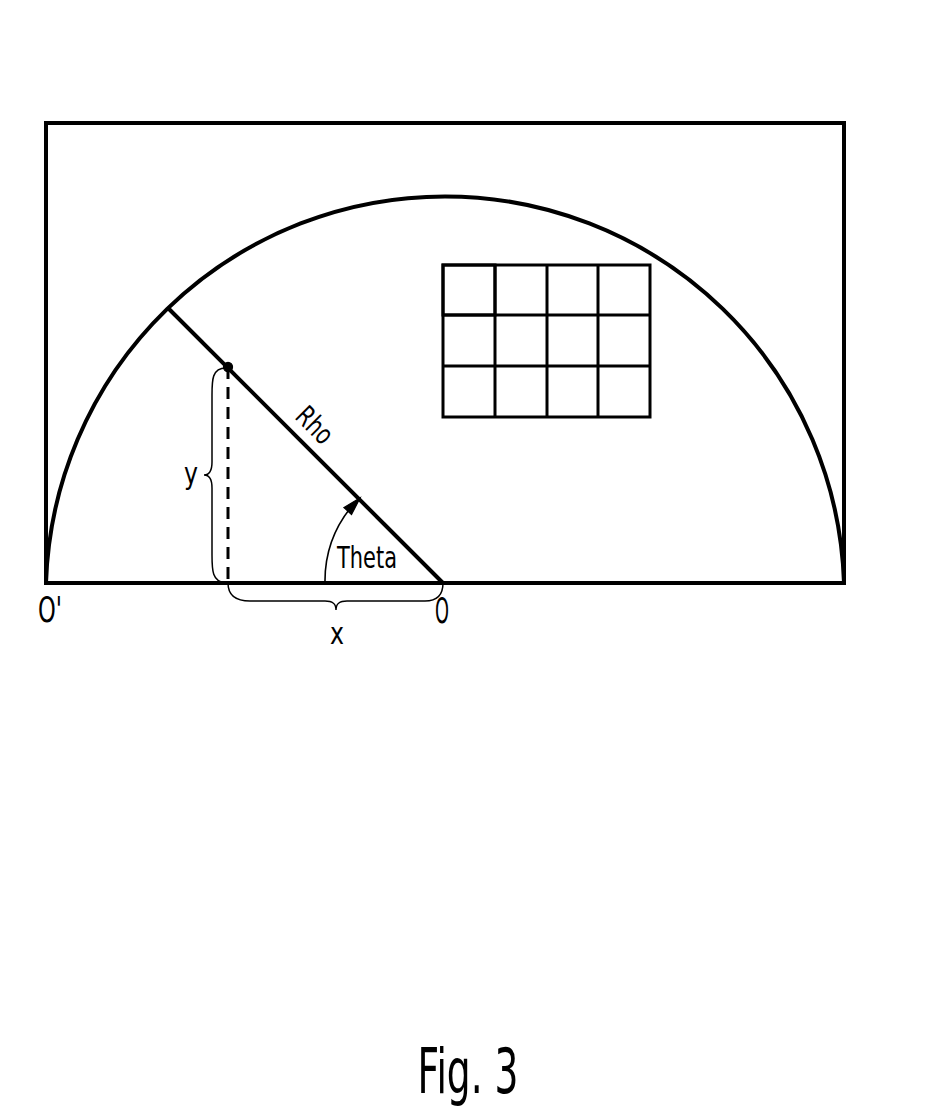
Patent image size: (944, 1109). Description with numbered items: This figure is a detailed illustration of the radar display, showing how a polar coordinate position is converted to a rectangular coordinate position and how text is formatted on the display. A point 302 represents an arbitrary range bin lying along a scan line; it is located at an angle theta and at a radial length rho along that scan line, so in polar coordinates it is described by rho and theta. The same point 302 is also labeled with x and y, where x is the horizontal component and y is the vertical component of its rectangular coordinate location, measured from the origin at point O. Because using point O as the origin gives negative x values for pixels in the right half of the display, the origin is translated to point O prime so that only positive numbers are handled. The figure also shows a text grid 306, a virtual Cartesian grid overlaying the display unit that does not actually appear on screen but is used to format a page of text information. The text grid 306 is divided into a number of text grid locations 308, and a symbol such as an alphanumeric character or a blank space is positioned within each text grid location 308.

The point 302 is at (229, 364).
The text grid 306 is at (472, 289).
The text grid location 308 is at (482, 278).